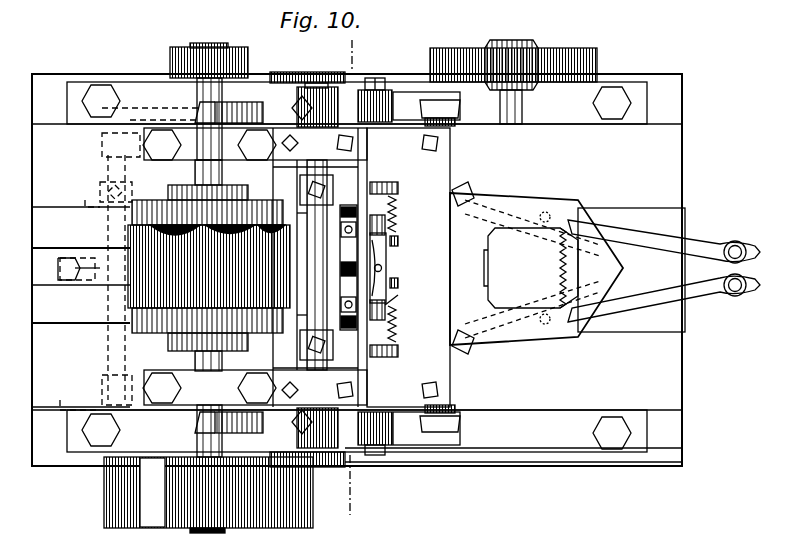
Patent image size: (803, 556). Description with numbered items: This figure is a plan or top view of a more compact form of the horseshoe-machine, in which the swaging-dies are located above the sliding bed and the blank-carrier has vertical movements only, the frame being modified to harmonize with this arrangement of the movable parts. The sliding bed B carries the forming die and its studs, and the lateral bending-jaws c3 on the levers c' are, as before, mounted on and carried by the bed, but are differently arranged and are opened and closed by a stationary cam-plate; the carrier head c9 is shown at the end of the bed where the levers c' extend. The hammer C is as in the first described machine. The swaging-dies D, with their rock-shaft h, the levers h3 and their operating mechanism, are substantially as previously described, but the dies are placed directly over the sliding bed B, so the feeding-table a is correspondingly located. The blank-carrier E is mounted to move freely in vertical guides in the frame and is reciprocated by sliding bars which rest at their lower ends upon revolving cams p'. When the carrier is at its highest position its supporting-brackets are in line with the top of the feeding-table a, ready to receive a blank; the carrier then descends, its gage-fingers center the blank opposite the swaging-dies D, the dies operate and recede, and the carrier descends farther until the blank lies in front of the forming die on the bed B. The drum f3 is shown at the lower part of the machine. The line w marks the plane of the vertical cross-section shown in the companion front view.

The levers h3 is at (398, 96).
The revolving cams p' is at (253, 265).
The lateral bending-jaws c3 is at (526, 269).
The levers c' is at (664, 269).
The carrier head c9 is at (536, 269).
The sliding bed B is at (531, 268).
The feeding-table a is at (408, 267).
The hammer C is at (209, 265).
The rock-shaft h is at (316, 265).
The swaging-dies D is at (323, 267).
The blank-carrier E is at (388, 269).
The drum f3 is at (208, 495).
The section line w is at (348, 287).